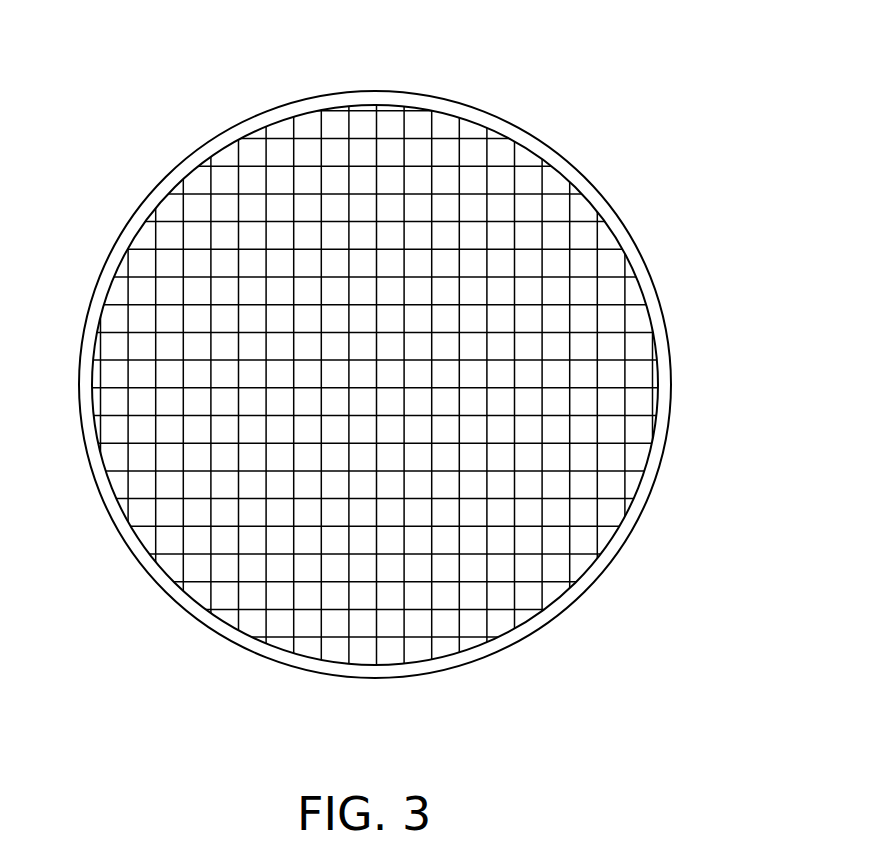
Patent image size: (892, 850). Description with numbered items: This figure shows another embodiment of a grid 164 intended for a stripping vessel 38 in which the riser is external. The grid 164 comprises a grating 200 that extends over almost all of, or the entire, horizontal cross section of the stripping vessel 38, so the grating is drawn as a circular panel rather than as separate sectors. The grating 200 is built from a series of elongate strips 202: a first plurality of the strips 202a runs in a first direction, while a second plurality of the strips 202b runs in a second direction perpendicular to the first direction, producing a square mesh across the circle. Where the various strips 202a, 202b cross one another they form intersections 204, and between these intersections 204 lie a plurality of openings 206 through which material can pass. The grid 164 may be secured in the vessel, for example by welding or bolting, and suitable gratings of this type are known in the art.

The stripping vessel 38 is at (105, 614).
The grid 164 is at (598, 134).
The grating 200 is at (388, 128).
The elongate strips 202 is at (350, 128).
The first plurality of the strips 202a is at (597, 515).
The second plurality of the strips 202b is at (603, 418).
The intersections 204 is at (597, 358).
The openings 206 is at (552, 265).